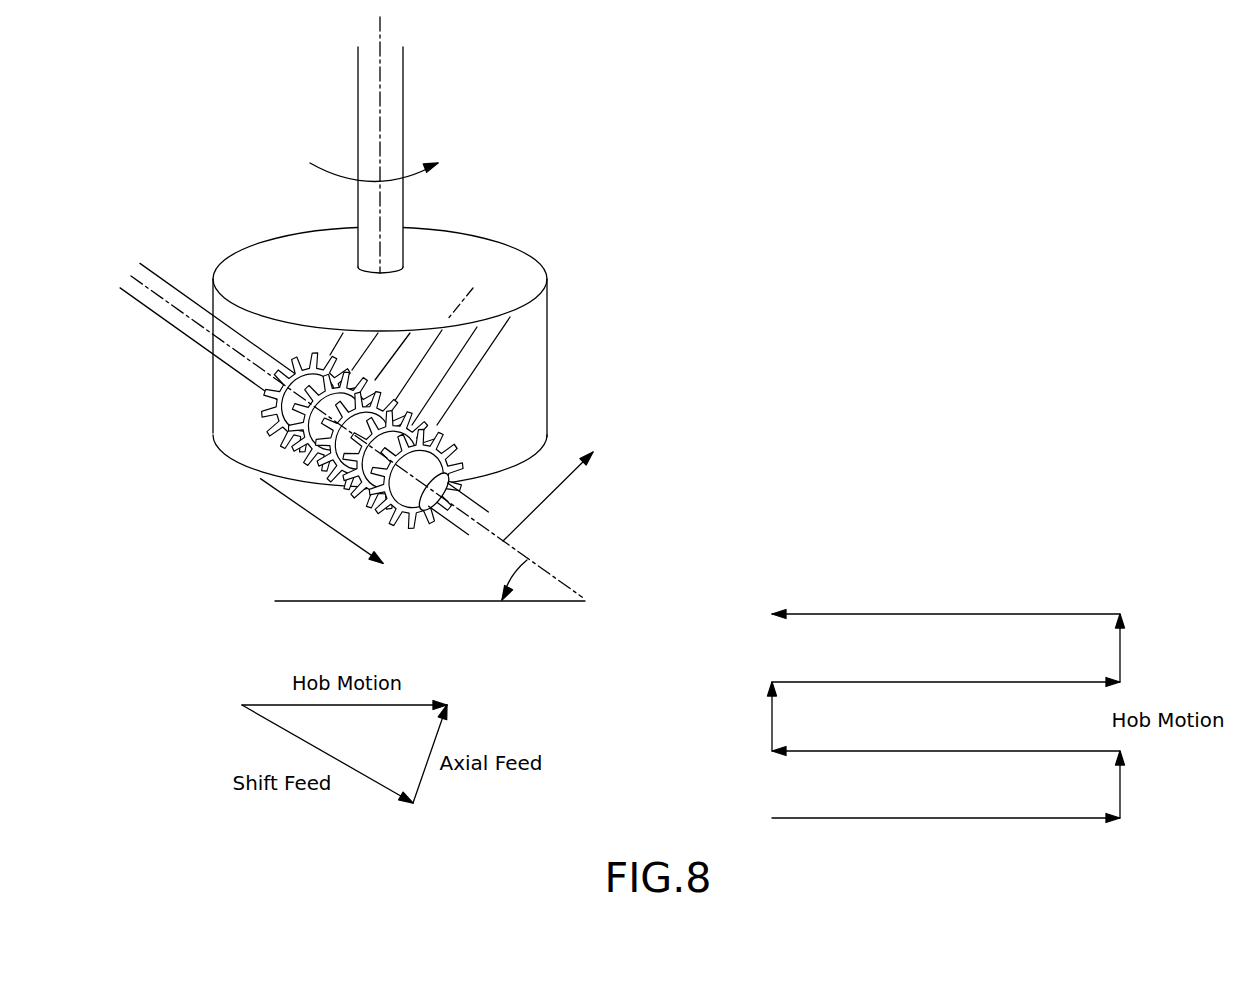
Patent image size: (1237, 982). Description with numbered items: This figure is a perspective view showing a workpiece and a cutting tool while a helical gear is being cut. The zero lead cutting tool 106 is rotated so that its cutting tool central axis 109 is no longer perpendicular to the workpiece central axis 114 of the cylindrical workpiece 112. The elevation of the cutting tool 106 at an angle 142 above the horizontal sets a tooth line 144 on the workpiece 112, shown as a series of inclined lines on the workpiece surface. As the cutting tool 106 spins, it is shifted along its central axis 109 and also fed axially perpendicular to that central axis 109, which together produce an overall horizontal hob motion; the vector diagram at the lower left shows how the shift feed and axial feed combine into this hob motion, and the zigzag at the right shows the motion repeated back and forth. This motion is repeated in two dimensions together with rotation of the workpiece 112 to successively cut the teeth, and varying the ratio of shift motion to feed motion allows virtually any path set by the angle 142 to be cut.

The cutting tool 106 is at (265, 445).
The cutting tool central axis 109 is at (555, 577).
The workpiece 112 is at (530, 397).
The workpiece central axis 114 is at (380, 62).
The angle 142 is at (492, 580).
The tooth line 144 is at (455, 318).